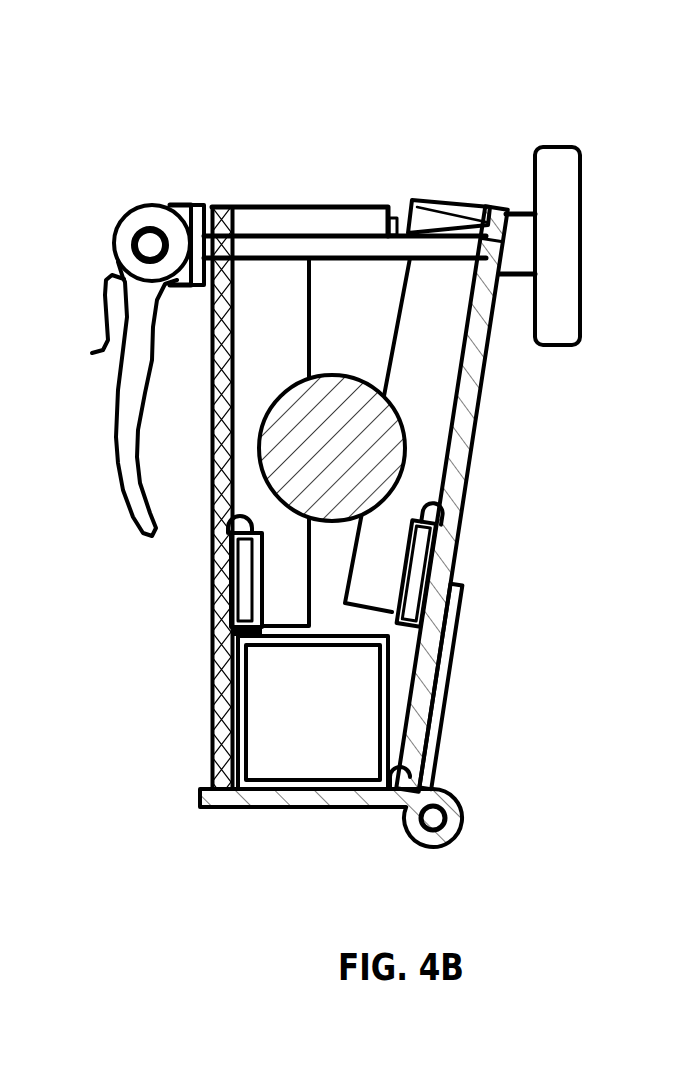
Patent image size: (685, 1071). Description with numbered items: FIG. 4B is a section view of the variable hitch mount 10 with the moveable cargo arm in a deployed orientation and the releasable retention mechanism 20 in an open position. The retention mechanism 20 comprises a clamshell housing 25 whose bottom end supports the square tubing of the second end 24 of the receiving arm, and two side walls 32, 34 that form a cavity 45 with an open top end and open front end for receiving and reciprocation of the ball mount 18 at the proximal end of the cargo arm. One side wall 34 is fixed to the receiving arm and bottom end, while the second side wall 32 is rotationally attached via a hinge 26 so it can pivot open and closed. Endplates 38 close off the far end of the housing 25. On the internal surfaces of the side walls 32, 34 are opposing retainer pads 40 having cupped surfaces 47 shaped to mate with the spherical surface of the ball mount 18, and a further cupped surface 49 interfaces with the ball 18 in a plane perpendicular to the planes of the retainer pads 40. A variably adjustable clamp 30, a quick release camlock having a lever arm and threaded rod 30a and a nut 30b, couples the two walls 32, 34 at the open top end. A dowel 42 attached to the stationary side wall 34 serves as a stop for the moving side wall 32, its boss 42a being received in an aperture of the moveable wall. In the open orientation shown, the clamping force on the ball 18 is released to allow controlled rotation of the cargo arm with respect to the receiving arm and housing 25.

The variable hitch mount 10 is at (126, 113).
The ball mount 18 is at (275, 493).
The releasable retention mechanism 20 is at (484, 712).
The second end 24 is at (347, 782).
The clamshell housing 25 is at (487, 616).
The hinge 26 is at (466, 820).
The variably adjustable clamp 30 is at (120, 197).
The lever arm and threaded rod 30a is at (93, 353).
The nut 30b is at (580, 316).
The second side wall 32 is at (468, 438).
The side wall 34 is at (211, 697).
The endplates 38 is at (288, 338).
The retainer pads 40 is at (236, 528).
The dowel 42 is at (303, 207).
The boss 42a is at (397, 232).
The cavity 45 is at (260, 383).
The cupped surfaces 47 is at (268, 577).
The cupped surface 49 is at (266, 652).